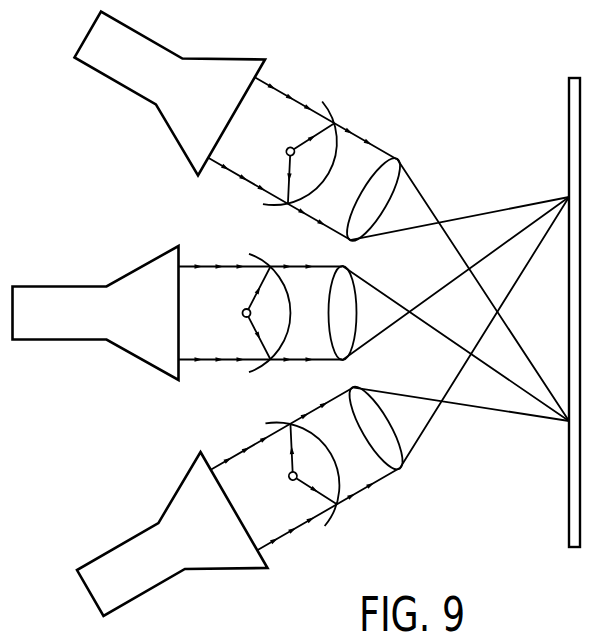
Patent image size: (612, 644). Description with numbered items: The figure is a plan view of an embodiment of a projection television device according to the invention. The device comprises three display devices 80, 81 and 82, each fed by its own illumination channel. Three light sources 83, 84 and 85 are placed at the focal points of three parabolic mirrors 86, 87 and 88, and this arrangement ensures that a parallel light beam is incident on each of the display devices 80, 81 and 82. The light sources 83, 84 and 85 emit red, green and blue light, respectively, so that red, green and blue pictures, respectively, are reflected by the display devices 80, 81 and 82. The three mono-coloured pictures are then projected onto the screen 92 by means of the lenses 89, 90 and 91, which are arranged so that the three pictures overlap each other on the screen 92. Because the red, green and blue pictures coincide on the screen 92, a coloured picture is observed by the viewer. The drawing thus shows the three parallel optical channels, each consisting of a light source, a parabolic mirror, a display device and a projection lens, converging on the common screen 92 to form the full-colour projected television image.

The display device 80 is at (156, 526).
The display device 81 is at (135, 272).
The display device 82 is at (213, 58).
The light source 83 is at (289, 480).
The light source 84 is at (244, 316).
The light source 85 is at (286, 150).
The parabolic mirror 86 is at (330, 516).
The parabolic mirror 87 is at (265, 371).
The parabolic mirror 88 is at (335, 113).
The lens 89 is at (397, 457).
The lens 90 is at (343, 347).
The lens 91 is at (367, 224).
The screen 92 is at (569, 300).